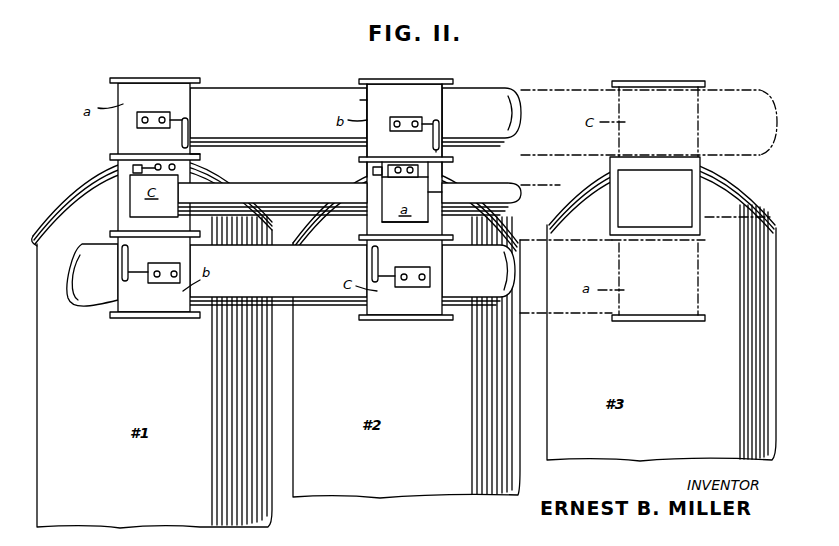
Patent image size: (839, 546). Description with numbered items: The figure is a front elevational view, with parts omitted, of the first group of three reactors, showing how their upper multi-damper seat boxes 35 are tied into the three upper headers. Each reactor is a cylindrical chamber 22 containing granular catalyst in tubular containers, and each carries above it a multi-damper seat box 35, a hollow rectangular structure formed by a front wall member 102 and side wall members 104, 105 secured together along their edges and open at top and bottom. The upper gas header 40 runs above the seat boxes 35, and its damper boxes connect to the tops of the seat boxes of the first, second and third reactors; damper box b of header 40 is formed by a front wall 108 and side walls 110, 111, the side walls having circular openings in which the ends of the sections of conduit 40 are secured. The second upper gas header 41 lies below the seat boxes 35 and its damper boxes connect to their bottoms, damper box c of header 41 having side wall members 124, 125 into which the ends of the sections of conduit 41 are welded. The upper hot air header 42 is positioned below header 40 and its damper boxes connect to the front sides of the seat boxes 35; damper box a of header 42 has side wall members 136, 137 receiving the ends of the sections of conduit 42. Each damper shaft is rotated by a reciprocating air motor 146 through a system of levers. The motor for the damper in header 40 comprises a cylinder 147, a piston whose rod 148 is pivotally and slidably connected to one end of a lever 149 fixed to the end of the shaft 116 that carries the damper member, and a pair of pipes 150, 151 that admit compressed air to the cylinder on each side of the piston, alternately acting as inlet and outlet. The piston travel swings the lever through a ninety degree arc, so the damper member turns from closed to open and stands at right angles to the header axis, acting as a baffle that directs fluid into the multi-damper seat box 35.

The tank 22 is at (124, 520).
The upper multi-damper seat box 35 is at (123, 208).
The upper gas conduit or header 40 is at (262, 92).
The second upper gas conduit or header 41 is at (299, 300).
The upper hot air conduit or header 42 is at (257, 186).
The front wall member 102 is at (397, 220).
The side wall member 104 is at (372, 168).
The side wall member 105 is at (461, 174).
The front wall 108 is at (420, 92).
The side wall 110 is at (363, 101).
The side wall 111 is at (454, 87).
The shaft 116 is at (200, 153).
The side wall member 124 is at (369, 273).
The side wall member 125 is at (442, 280).
The side wall member 136 is at (382, 190).
The side wall member 137 is at (428, 192).
The reciprocating air motor 146 is at (156, 114).
The cylinder 147 is at (406, 132).
The rod 148 is at (439, 119).
The lever 149 is at (440, 134).
The pipe 150 is at (144, 124).
The pipe 151 is at (162, 127).